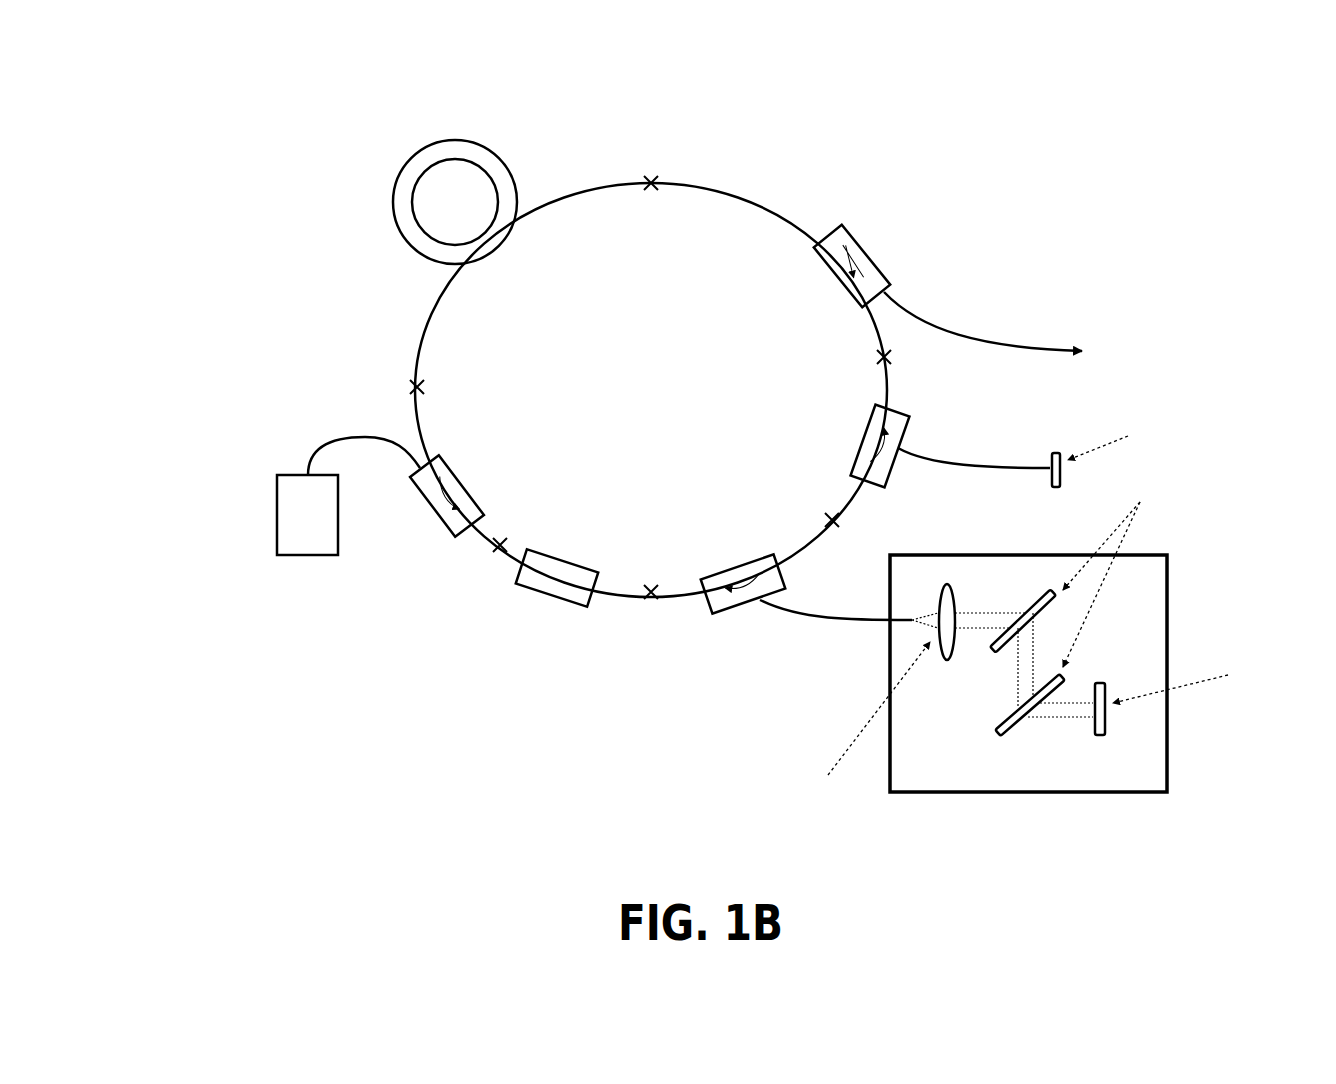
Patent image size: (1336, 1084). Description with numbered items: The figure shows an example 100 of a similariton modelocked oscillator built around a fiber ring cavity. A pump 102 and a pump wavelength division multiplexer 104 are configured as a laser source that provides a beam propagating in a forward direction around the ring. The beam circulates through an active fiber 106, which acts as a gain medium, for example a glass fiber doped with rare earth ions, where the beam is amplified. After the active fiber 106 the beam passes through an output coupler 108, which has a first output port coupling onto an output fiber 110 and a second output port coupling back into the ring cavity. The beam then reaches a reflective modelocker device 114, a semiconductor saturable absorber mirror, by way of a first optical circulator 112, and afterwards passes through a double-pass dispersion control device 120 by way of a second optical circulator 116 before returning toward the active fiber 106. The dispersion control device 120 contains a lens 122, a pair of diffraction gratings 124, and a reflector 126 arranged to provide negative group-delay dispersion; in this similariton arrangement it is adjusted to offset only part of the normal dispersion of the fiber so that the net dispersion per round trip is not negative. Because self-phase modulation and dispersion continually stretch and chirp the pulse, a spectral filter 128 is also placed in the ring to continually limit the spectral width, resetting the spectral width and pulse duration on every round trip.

The modelocked oscillator 100 is at (183, 80).
The pump 102 is at (277, 510).
The pump wavelength division multiplexer 104 is at (508, 437).
The active fiber 106 is at (393, 216).
The output coupler 108 is at (965, 238).
The output fiber 110 is at (1135, 326).
The first optical circulator 112 is at (868, 422).
The reflective modelocker device 114 is at (1228, 440).
The second optical circulator 116 is at (733, 605).
The dispersion control device 120 is at (962, 797).
The lens 122 is at (757, 772).
The diffraction gratings 124 is at (1205, 532).
The reflector 126 is at (1280, 690).
The spectral filter 128 is at (580, 552).